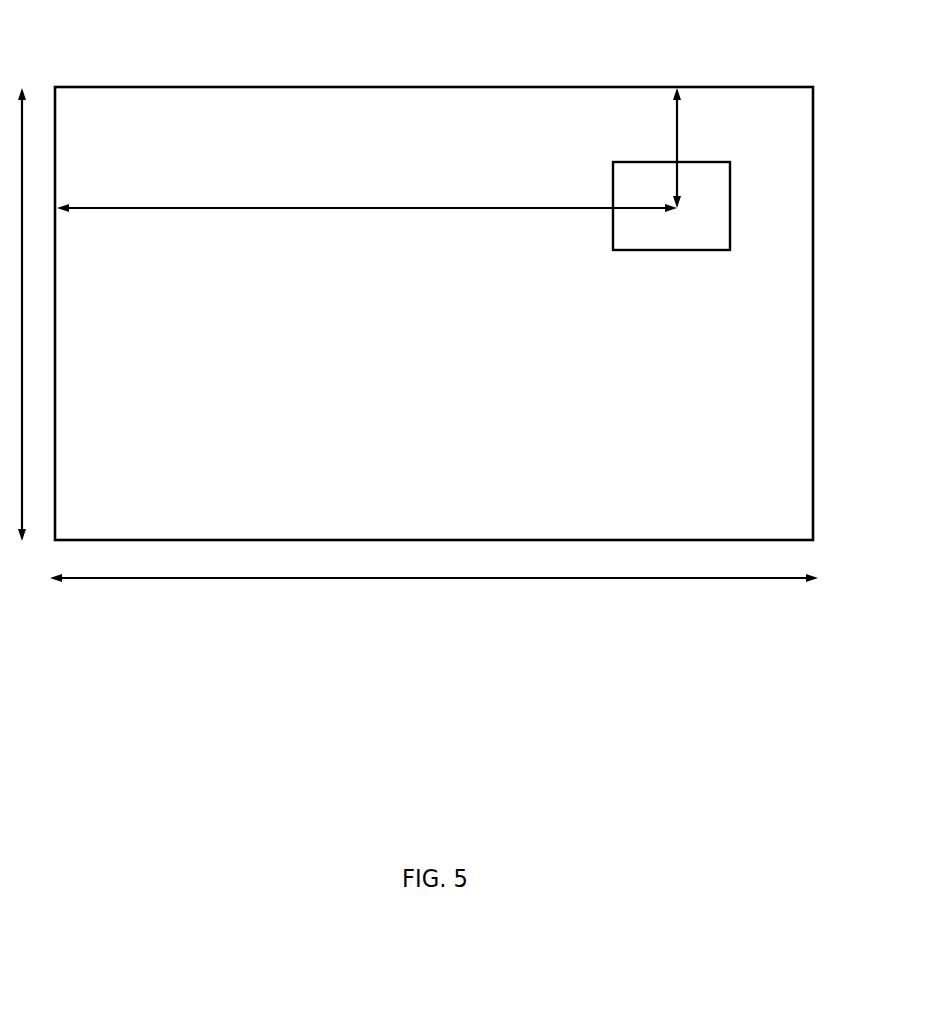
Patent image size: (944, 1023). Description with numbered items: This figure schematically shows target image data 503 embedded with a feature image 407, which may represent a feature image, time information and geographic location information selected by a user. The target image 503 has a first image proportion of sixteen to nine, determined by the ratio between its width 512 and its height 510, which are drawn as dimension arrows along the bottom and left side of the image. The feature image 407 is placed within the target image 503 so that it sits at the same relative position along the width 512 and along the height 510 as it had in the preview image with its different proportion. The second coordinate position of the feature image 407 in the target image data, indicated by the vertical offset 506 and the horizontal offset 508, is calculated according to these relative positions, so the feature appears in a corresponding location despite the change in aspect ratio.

The target image data 503 is at (797, 177).
The feature image 407 is at (692, 185).
The second coordinate position (vertical) 506 is at (680, 125).
The second coordinate position (horizontal) 508 is at (380, 207).
The height of the target image 510 is at (28, 80).
The width of the target image 512 is at (733, 578).